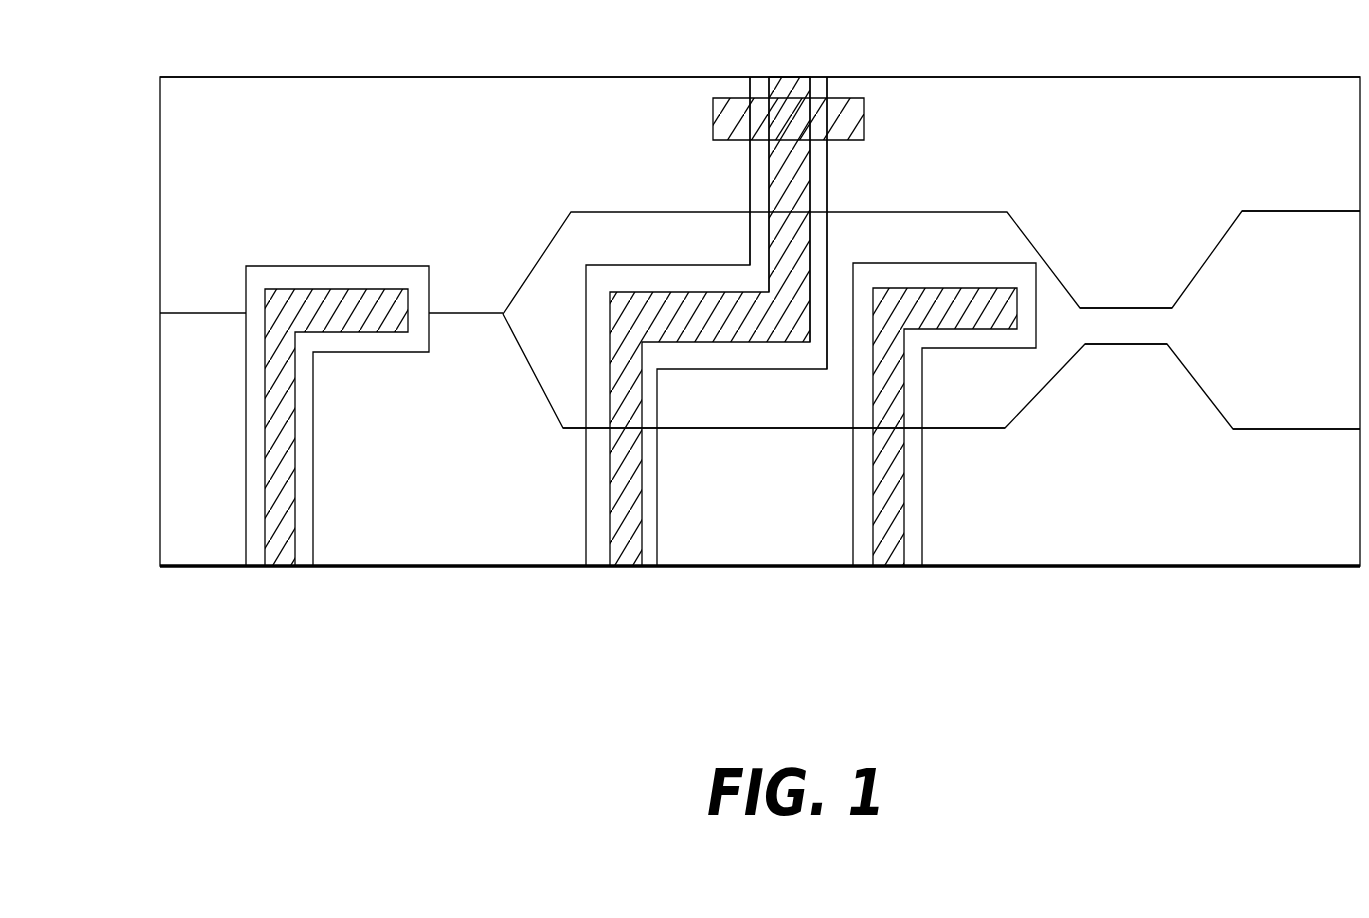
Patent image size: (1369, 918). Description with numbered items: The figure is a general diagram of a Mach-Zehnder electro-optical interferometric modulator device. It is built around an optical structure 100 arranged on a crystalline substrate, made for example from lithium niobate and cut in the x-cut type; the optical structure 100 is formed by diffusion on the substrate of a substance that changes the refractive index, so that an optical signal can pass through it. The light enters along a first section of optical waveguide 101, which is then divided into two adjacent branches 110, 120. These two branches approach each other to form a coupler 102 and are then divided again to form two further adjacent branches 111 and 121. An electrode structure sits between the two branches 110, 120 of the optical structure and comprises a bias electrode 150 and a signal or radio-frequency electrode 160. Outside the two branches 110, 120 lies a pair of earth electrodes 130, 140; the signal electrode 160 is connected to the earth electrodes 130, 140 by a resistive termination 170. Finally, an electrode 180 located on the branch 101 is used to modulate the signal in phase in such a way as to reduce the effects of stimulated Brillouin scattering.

The optical structure 100 is at (157, 532).
The first section of optical waveguide 101 is at (201, 313).
The coupler 102 is at (1117, 307).
The first adjacent branch 110 is at (607, 212).
The adjacent branch after coupler 111 is at (1278, 211).
The second adjacent branch 120 is at (740, 428).
The adjacent branch after coupler 121 is at (1263, 431).
The earth electrode 130 is at (1060, 128).
The earth electrode 140 is at (1052, 548).
The bias electrode 150 is at (947, 306).
The signal electrode 160 is at (670, 310).
The resistive termination 170 is at (845, 98).
The electrode 180 is at (355, 289).